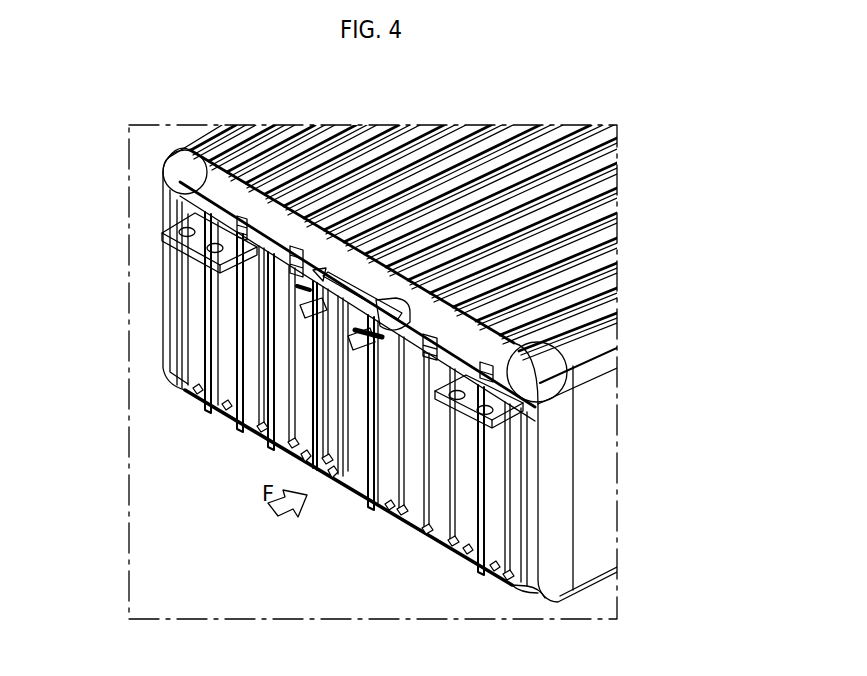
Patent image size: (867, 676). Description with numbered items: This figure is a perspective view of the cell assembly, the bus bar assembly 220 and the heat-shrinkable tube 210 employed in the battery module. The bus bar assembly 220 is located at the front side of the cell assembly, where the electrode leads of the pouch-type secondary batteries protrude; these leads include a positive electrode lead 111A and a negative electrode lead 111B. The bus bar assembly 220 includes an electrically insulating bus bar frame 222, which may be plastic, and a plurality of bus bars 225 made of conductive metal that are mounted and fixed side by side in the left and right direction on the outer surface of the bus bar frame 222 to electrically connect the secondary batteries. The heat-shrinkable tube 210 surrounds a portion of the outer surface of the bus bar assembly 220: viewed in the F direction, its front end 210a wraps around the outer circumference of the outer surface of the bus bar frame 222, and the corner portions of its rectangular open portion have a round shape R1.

The heat-shrinkable tube 210 is at (418, 150).
The front end of the heat-shrinkable tube 210a is at (527, 485).
The round shape R1 is at (189, 147).
The bus bar assembly 220 is at (366, 511).
The bus bar frame 222 is at (524, 578).
The bus bar 225 is at (282, 320).
The positive electrode lead 111A is at (190, 353).
The negative electrode lead 111B is at (222, 366).